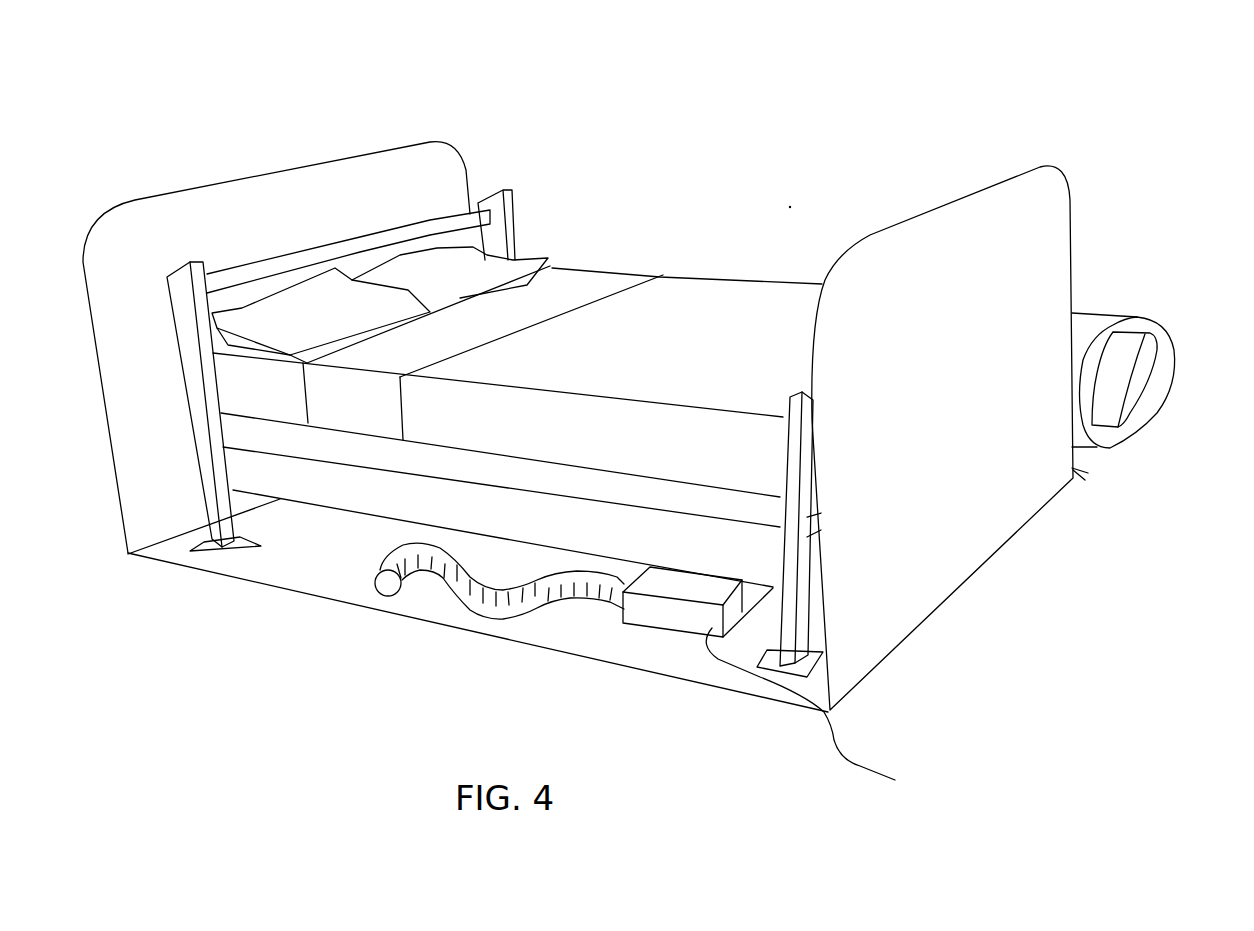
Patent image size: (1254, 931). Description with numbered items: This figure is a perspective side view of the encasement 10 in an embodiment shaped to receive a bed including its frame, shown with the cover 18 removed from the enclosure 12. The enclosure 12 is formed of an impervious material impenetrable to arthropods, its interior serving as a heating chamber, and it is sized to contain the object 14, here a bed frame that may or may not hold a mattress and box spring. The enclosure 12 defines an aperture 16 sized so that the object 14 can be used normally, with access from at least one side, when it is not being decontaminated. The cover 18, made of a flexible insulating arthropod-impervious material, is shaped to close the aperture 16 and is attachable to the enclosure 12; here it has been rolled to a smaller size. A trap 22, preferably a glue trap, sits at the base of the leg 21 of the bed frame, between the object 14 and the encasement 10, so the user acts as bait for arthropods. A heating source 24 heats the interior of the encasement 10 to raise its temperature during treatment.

The encasement 10 is at (252, 150).
The enclosure 12 is at (1068, 180).
The object 14 is at (712, 302).
The aperture 16 is at (142, 356).
The cover 18 is at (1190, 358).
The leg of the bed frame 21 is at (216, 531).
The trap 22 is at (242, 551).
The heating source 24 is at (647, 612).